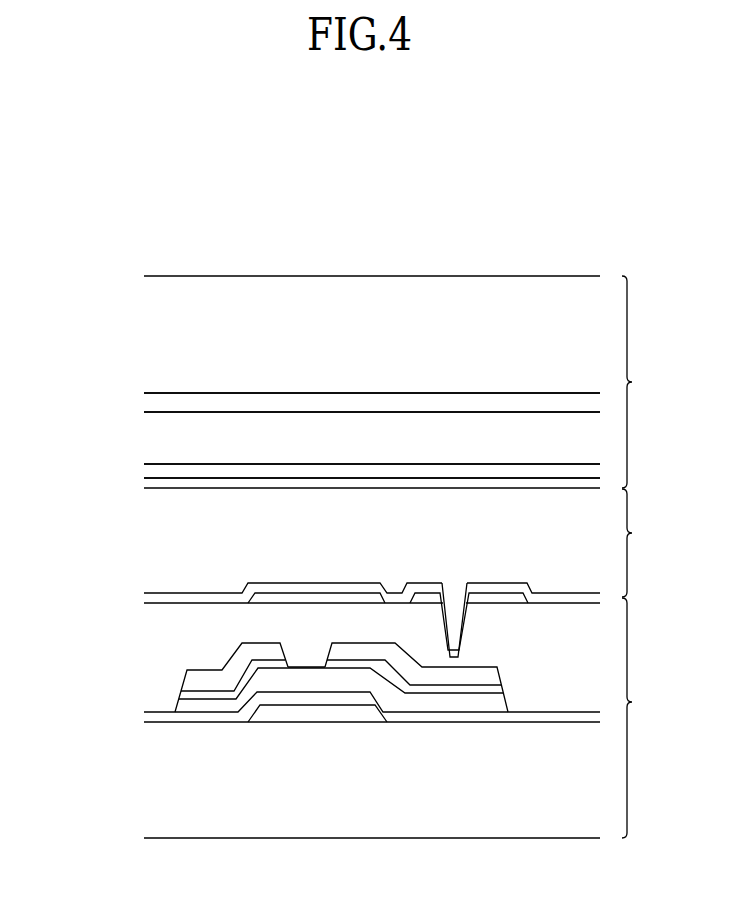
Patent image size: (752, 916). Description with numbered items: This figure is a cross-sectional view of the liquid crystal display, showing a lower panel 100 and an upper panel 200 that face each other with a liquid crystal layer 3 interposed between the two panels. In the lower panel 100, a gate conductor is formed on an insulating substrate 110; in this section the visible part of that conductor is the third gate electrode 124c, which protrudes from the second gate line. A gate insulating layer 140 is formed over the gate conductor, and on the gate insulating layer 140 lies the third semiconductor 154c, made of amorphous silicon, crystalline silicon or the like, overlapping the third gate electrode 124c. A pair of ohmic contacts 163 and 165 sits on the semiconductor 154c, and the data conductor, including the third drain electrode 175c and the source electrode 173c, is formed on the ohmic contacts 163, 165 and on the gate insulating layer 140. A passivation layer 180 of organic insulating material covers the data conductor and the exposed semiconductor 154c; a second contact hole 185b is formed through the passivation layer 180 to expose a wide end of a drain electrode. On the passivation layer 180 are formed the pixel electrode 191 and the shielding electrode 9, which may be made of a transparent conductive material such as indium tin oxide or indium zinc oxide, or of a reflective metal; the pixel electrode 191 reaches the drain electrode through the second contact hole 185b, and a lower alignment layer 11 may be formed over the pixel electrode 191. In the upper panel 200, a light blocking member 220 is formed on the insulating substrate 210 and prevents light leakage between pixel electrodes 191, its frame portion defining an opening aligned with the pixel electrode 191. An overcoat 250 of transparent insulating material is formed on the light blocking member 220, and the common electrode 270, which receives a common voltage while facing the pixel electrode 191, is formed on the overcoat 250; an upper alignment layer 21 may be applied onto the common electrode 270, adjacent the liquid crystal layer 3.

The insulating substrate 210 is at (150, 332).
The light blocking member 220 is at (150, 400).
The overcoat 250 is at (150, 435).
The common electrode 270 is at (150, 465).
The upper alignment layer 21 is at (143, 488).
The upper panel 200 is at (645, 382).
The liquid crystal layer 3 is at (634, 543).
The lower panel 100 is at (644, 718).
The insulating substrate 110 is at (150, 777).
The third gate electrode 124c is at (313, 710).
The gate insulating layer 140 is at (150, 715).
The third semiconductor 154c is at (410, 702).
The ohmic contact 163 is at (233, 695).
The ohmic contact 165 is at (448, 689).
The source electrode 173c is at (195, 690).
The third drain electrode 175c is at (490, 672).
The passivation layer 180 is at (150, 635).
The second contact hole 185b is at (460, 620).
The shielding electrode 9 is at (328, 598).
The pixel electrode 191 is at (507, 598).
The lower alignment layer 11 is at (150, 598).